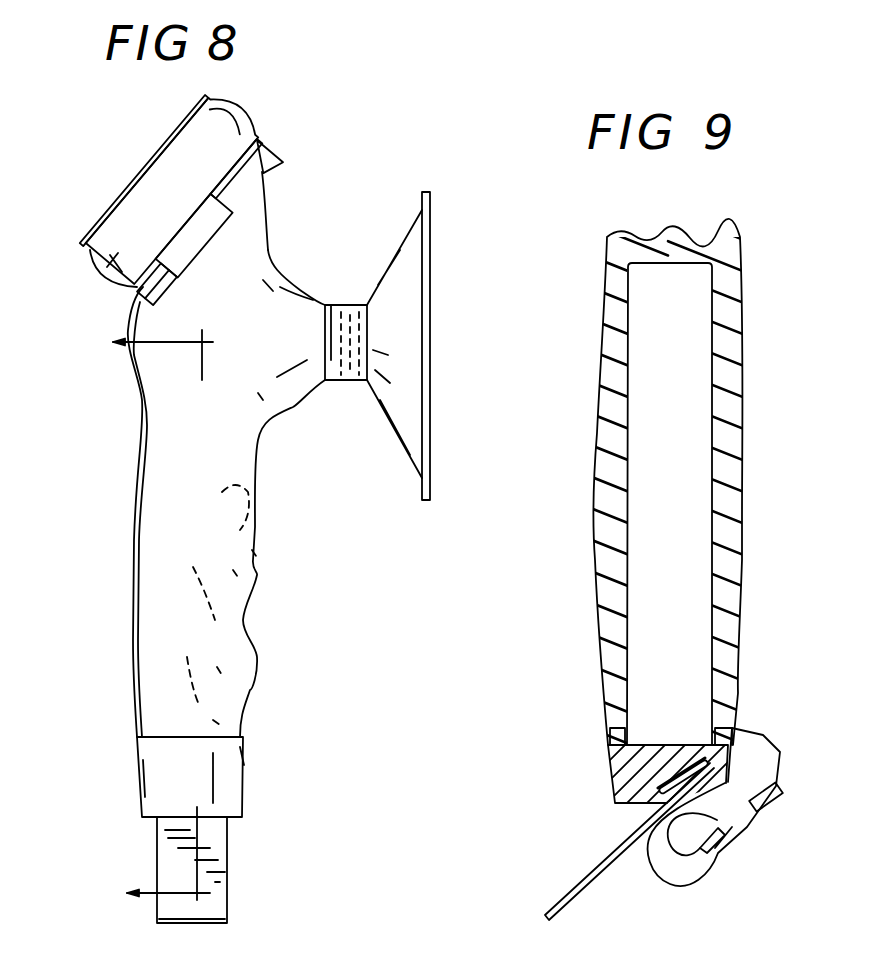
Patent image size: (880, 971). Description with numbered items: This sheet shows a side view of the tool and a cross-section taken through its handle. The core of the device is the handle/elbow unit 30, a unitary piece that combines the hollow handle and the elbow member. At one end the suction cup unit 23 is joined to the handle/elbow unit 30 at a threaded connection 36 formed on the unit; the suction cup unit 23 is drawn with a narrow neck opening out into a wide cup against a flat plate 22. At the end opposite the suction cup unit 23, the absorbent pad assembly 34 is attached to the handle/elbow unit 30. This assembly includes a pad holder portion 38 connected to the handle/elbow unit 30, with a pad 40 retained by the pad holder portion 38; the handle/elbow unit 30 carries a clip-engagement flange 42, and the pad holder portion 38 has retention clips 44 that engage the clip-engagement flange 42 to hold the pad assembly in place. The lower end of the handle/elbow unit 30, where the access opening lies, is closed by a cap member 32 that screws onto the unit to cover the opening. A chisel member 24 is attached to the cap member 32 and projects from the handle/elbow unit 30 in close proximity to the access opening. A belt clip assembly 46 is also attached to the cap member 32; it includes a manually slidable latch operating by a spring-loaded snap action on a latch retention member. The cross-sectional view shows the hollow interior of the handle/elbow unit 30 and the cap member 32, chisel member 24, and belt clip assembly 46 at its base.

In FIG. 8, the mounting plate 22 is at (430, 487).
In FIG. 8, the suction cup unit 23 is at (447, 356).
In FIG. 9, the chisel member 24 is at (575, 890).
In FIG. 8, the handle/elbow unit 30 is at (277, 541).
In FIG. 9, the handle/elbow unit 30 is at (757, 443).
In FIG. 8, the cap member 32 is at (232, 783).
In FIG. 9, the cap member 32 is at (618, 775).
In FIG. 8, the absorbent pad assembly 34 is at (228, 232).
In FIG. 8, the threaded connection 36 is at (343, 317).
In FIG. 8, the pad holder portion 38 is at (108, 272).
In FIG. 8, the pad 40 is at (107, 210).
In FIG. 8, the clip-engagement flange 42 is at (263, 183).
In FIG. 8, the retention clips 44 is at (213, 228).
In FIG. 9, the belt clip assembly 46 is at (748, 853).